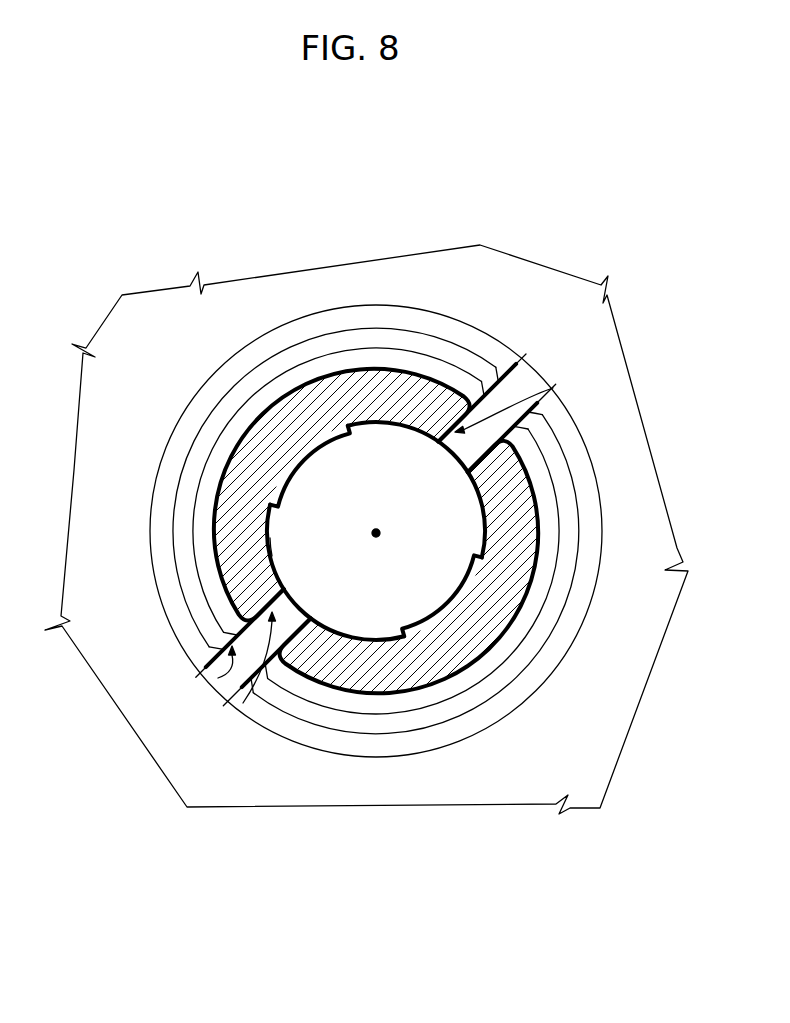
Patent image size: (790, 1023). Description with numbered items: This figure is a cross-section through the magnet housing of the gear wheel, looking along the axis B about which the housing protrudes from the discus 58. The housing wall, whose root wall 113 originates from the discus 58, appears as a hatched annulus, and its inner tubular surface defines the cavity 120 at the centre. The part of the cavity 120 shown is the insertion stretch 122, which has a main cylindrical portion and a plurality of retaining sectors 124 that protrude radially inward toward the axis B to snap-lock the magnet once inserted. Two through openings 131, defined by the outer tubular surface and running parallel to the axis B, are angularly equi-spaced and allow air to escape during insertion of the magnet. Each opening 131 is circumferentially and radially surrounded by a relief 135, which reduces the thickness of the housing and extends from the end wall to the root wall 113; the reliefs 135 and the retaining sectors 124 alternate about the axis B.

The discus 58 is at (137, 317).
The root wall 113 is at (489, 641).
The cavity 120 is at (363, 622).
The insertion stretch 122 is at (284, 547).
The retaining sectors 124 is at (312, 465).
The through openings 131 is at (553, 388).
The reliefs 135 is at (505, 392).
The axis B is at (372, 534).